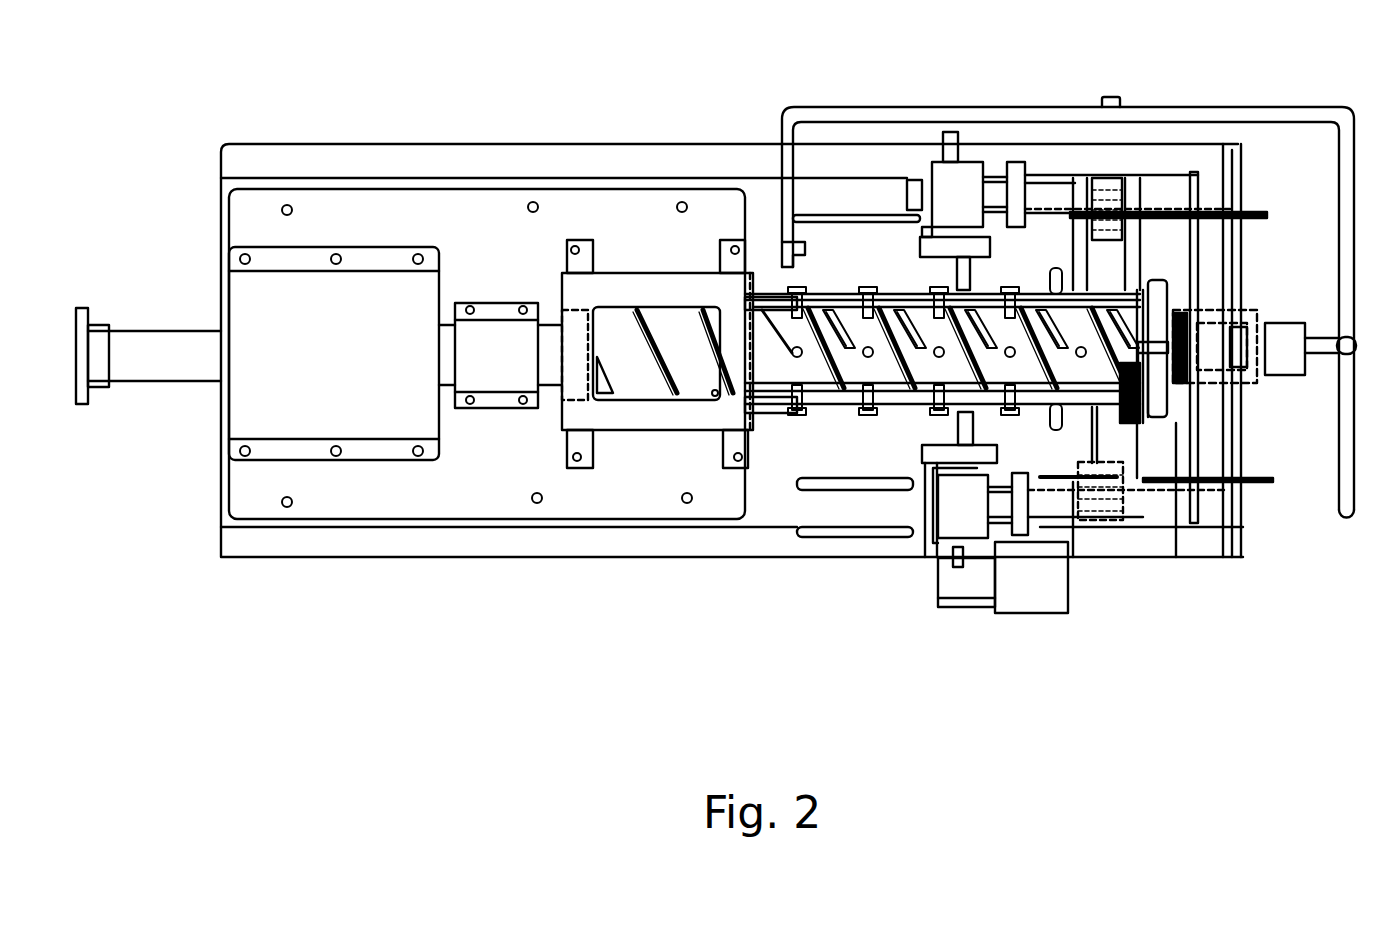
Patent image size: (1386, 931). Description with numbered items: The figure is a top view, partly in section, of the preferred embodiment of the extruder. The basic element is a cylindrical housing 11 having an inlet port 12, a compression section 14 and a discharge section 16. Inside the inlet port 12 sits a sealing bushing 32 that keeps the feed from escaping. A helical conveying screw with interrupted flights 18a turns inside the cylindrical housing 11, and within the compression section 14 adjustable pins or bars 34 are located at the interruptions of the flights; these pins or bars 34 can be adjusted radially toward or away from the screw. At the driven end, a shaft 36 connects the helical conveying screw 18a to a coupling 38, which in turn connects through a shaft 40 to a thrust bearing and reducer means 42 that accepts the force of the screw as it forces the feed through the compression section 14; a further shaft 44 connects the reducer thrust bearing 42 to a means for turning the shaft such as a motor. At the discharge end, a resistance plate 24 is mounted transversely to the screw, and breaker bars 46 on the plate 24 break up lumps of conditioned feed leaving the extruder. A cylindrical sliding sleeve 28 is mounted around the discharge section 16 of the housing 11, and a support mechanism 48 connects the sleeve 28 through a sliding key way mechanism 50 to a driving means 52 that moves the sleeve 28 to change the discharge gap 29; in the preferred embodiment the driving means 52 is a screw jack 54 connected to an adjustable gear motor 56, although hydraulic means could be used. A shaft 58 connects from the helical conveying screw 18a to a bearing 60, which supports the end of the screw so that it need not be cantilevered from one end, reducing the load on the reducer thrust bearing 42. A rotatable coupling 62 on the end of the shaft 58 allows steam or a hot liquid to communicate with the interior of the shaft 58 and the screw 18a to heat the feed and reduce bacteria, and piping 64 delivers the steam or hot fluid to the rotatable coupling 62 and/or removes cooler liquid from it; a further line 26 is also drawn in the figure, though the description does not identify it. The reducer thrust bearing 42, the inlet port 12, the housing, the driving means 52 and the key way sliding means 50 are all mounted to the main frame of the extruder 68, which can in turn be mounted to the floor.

The cylindrical housing 11 is at (840, 290).
The inlet port 12 is at (638, 283).
The compression section 14 is at (887, 288).
The discharge section 16 is at (1125, 288).
The helical conveying screw with interrupted flights 18a is at (687, 337).
The resistance plate 24 is at (1160, 297).
The tube 26 is at (1165, 290).
The cylindrical sliding sleeve 28 is at (1132, 413).
The discharge gap 29 is at (1150, 300).
The sealing bushing 32 is at (580, 327).
The adjustable pins or bars 34 is at (795, 412).
The shaft 36 is at (546, 320).
The coupling 38 is at (508, 307).
The shaft 40 is at (452, 323).
The thrust bearing and reducer means 42 is at (325, 425).
The shaft 44 is at (174, 329).
The breaker bars 46 is at (1170, 490).
The support mechanism 48 is at (1095, 190).
The sliding key way mechanism 50 is at (1058, 205).
The driving means 52 is at (923, 558).
The screw jack 54 is at (953, 518).
The adjustable gear motor 56 is at (1010, 595).
The shaft 58 is at (1198, 387).
The bearing 60 is at (1247, 387).
The rotatable coupling 62 is at (1290, 375).
The piping 64 is at (1339, 343).
The main frame of the extruder 68 is at (643, 545).